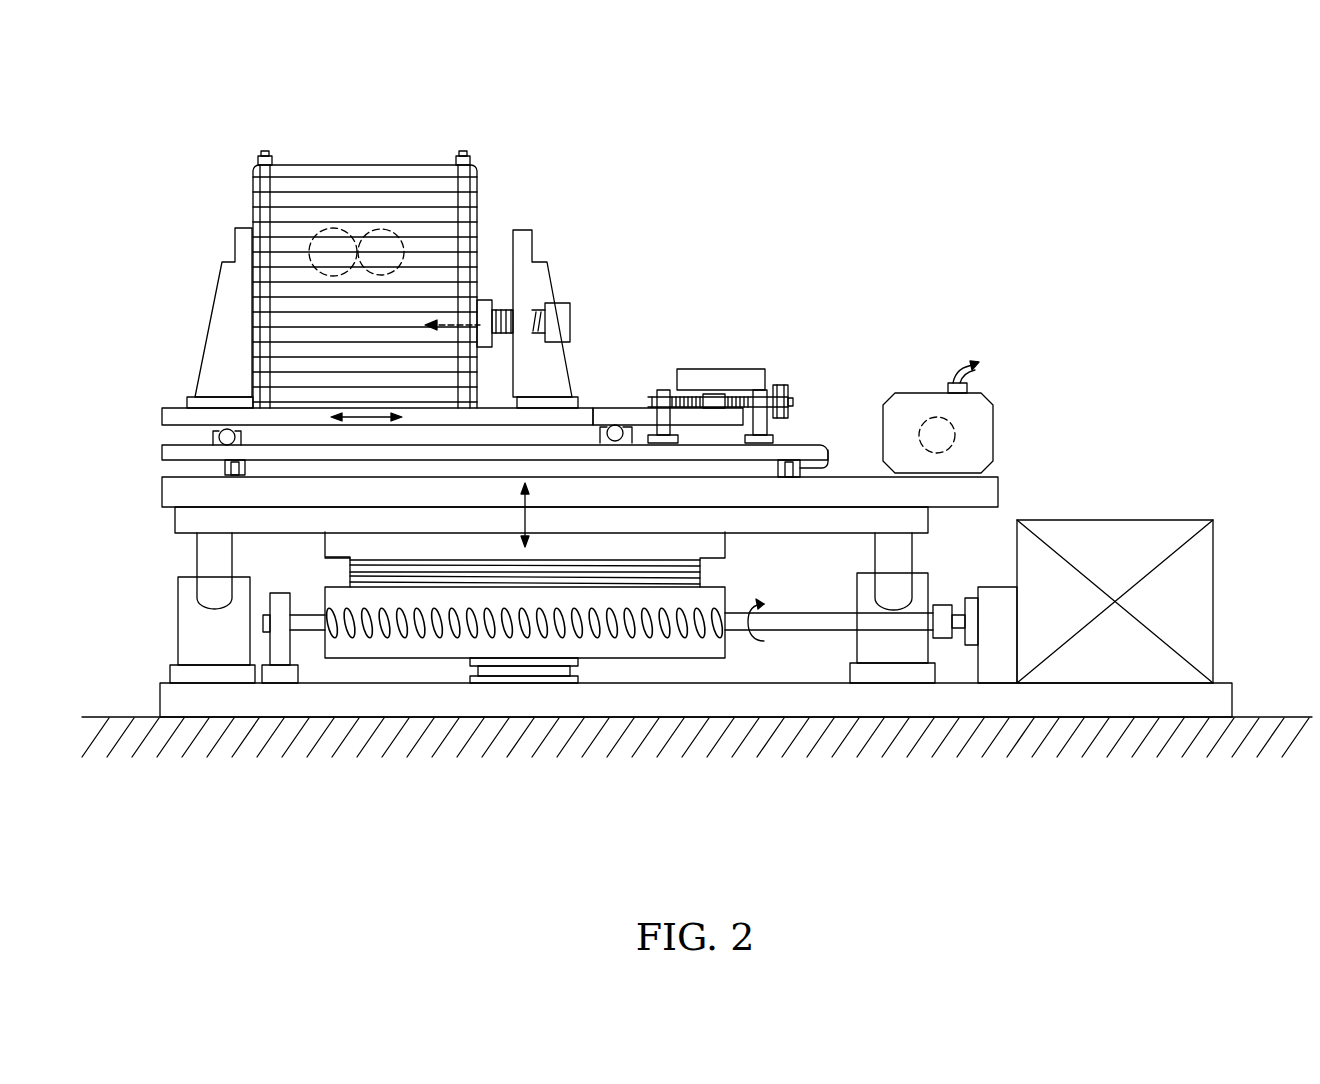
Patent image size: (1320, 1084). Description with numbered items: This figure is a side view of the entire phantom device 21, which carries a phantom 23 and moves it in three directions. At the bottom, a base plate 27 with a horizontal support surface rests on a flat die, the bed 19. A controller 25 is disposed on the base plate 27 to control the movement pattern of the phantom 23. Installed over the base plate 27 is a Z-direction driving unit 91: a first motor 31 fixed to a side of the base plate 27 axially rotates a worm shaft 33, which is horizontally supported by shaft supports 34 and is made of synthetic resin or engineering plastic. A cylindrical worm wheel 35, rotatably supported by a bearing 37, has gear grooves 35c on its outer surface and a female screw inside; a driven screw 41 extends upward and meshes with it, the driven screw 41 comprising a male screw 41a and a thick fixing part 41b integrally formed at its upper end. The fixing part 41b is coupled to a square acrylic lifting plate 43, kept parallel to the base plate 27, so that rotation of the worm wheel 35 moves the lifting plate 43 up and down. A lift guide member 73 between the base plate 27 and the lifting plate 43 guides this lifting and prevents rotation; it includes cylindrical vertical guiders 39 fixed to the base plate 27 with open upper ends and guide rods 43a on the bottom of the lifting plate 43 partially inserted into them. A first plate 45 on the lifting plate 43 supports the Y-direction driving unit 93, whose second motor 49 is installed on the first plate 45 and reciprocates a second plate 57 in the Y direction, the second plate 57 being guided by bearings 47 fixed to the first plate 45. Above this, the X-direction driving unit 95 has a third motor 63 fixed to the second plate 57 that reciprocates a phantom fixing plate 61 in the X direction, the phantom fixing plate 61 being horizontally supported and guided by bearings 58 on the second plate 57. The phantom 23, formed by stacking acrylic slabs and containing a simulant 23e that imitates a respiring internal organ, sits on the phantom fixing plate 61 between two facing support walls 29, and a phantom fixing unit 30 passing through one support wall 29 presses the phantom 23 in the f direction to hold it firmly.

The bed 19 is at (110, 718).
The phantom device 21 is at (905, 208).
The phantom 23 is at (303, 155).
The simulant 23e is at (365, 228).
The controller 25 is at (1200, 556).
The base plate 27 is at (1232, 702).
The support walls 29 is at (215, 305).
The phantom fixing unit 30 is at (580, 303).
The first motor 31 is at (1000, 665).
The worm shaft 33 is at (812, 622).
The shaft supports 34 is at (300, 662).
The worm wheel 35 is at (620, 652).
The gear grooves 35c is at (408, 628).
The bearing 37 is at (528, 683).
The vertical guiders 39 is at (920, 598).
The driven screw 41 is at (322, 568).
The male screw 41a is at (700, 578).
The fixing part 41b is at (710, 546).
The lifting plate 43 is at (977, 510).
The guide rods 43a is at (210, 587).
The first plate 45 is at (165, 492).
The bearings 47 is at (817, 455).
The second motor 49 is at (975, 425).
The second plate 57 is at (165, 455).
The bearings 58 is at (212, 438).
The phantom fixing plate 61 is at (165, 415).
The third motor 63 is at (740, 375).
The lift guide member 73 is at (134, 584).
The Z-direction driving unit 91 is at (692, 662).
The Y-direction driving unit 93 is at (1025, 450).
The X-direction driving unit 95 is at (716, 355).